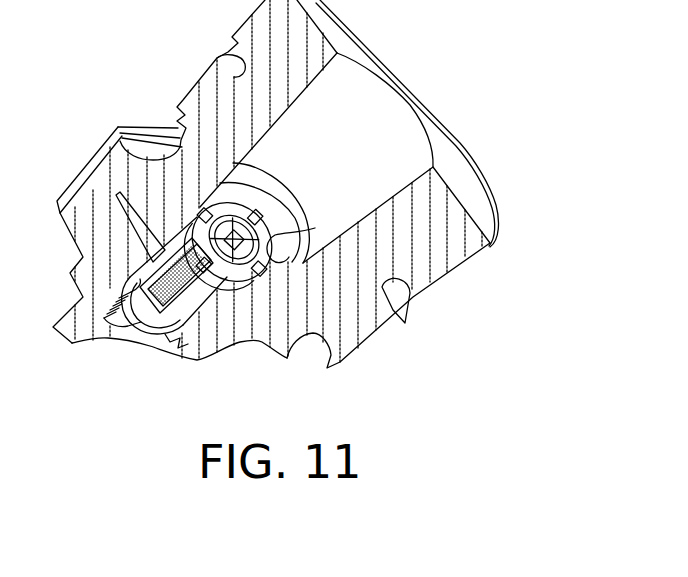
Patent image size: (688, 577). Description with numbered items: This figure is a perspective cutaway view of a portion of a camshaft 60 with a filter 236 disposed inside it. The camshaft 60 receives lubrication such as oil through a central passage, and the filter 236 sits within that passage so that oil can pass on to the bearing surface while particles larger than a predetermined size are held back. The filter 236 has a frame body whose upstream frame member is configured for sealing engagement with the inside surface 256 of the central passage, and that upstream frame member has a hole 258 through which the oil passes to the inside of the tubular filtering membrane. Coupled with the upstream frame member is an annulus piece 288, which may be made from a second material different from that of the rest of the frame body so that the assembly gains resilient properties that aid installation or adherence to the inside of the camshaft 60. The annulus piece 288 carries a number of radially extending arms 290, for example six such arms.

The camshaft 60 is at (472, 253).
The inside surface 256 is at (358, 80).
The hole 258 is at (233, 217).
The annulus piece 288 is at (315, 228).
The radially extending arms 290 is at (218, 318).
The filter 236 is at (170, 325).